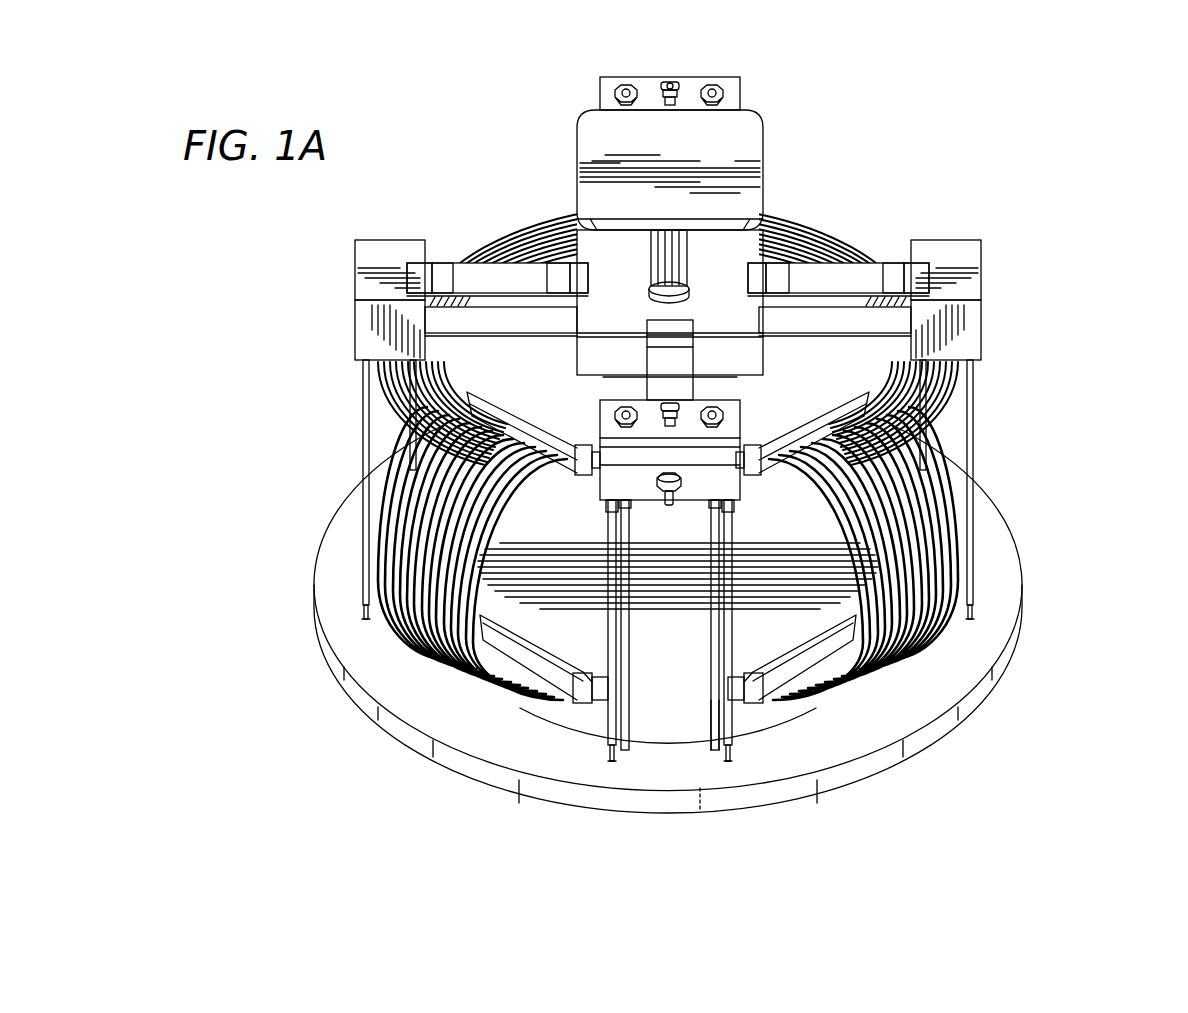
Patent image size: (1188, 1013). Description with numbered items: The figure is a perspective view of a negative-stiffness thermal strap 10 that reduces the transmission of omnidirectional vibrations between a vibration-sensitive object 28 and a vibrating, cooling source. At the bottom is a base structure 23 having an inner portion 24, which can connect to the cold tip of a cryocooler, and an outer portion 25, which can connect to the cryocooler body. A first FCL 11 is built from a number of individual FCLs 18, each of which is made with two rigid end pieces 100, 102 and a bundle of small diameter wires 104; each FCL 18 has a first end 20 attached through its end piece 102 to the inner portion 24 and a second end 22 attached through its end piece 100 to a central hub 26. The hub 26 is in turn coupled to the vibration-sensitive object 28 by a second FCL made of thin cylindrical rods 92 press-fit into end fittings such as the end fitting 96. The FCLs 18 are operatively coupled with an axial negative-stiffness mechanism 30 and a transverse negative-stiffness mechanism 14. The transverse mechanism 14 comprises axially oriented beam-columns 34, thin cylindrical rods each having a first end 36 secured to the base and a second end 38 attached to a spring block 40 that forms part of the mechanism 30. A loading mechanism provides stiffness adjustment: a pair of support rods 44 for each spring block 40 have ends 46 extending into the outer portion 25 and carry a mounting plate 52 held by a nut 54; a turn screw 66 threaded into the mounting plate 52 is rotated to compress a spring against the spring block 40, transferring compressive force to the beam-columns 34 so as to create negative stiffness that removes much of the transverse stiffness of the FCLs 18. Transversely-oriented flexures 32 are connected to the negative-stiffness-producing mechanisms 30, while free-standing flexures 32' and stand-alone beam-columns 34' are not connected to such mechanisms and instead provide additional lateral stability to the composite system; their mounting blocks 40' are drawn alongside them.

The negative-stiffness thermal strap 10 is at (1012, 189).
The first FCL 11 is at (234, 490).
The transverse negative-stiffness mechanism 14 is at (998, 440).
The individual FCL 18 is at (637, 592).
The first end 20 is at (800, 660).
The second end 22 is at (840, 395).
The base structure 23 is at (1056, 668).
The inner portion 24 is at (590, 710).
The outer portion 25 is at (928, 693).
The central hub 26 is at (490, 355).
The vibration-sensitive object 28 is at (750, 155).
The axial negative-stiffness mechanism 30 is at (694, 522).
The transversely-oriented flexure 32 is at (650, 320).
The free-standing transversely-oriented flexure 32' is at (739, 285).
The beam-column 34 is at (657, 622).
The free-standing beam-column 34' is at (700, 482).
The first end 36 is at (363, 612).
The second end 38 is at (605, 507).
The spring block 40 is at (688, 441).
The side mounting block 40' is at (672, 300).
The support rod 44 is at (613, 635).
The end 46 is at (628, 762).
The mounting plate 52 is at (608, 85).
The nut 54 is at (720, 85).
The turn screw 66 is at (672, 80).
The thin cylindrical rod 92 is at (665, 270).
The end fitting 96 is at (692, 290).
The rigid end piece 100 is at (752, 462).
The rigid end piece 102 is at (752, 700).
The small diameter wires 104 is at (862, 733).